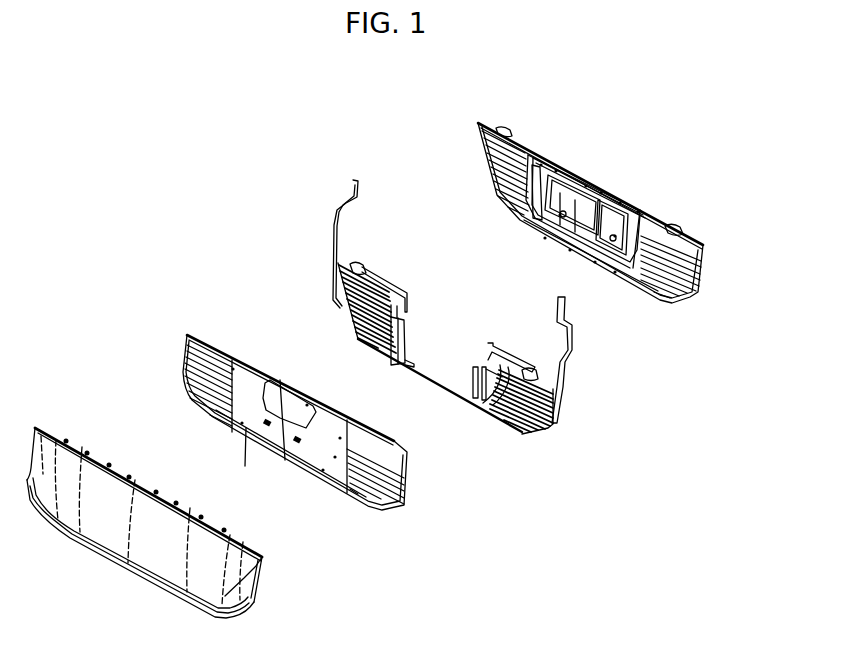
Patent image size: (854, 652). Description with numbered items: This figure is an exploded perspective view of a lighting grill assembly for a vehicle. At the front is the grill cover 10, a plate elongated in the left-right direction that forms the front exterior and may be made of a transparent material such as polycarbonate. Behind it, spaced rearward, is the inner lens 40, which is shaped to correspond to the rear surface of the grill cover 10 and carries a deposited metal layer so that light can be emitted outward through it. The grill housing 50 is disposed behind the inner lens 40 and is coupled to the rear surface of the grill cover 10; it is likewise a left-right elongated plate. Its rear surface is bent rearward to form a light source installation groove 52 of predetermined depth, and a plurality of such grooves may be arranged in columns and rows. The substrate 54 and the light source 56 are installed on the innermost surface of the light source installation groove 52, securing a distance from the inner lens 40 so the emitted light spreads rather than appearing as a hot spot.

The grill cover 10 is at (105, 525).
The inner lens 40 is at (258, 425).
The grill housing 50 is at (590, 196).
The light source installation groove 52 is at (498, 133).
The substrate 54 is at (427, 307).
The light source 56 is at (355, 267).